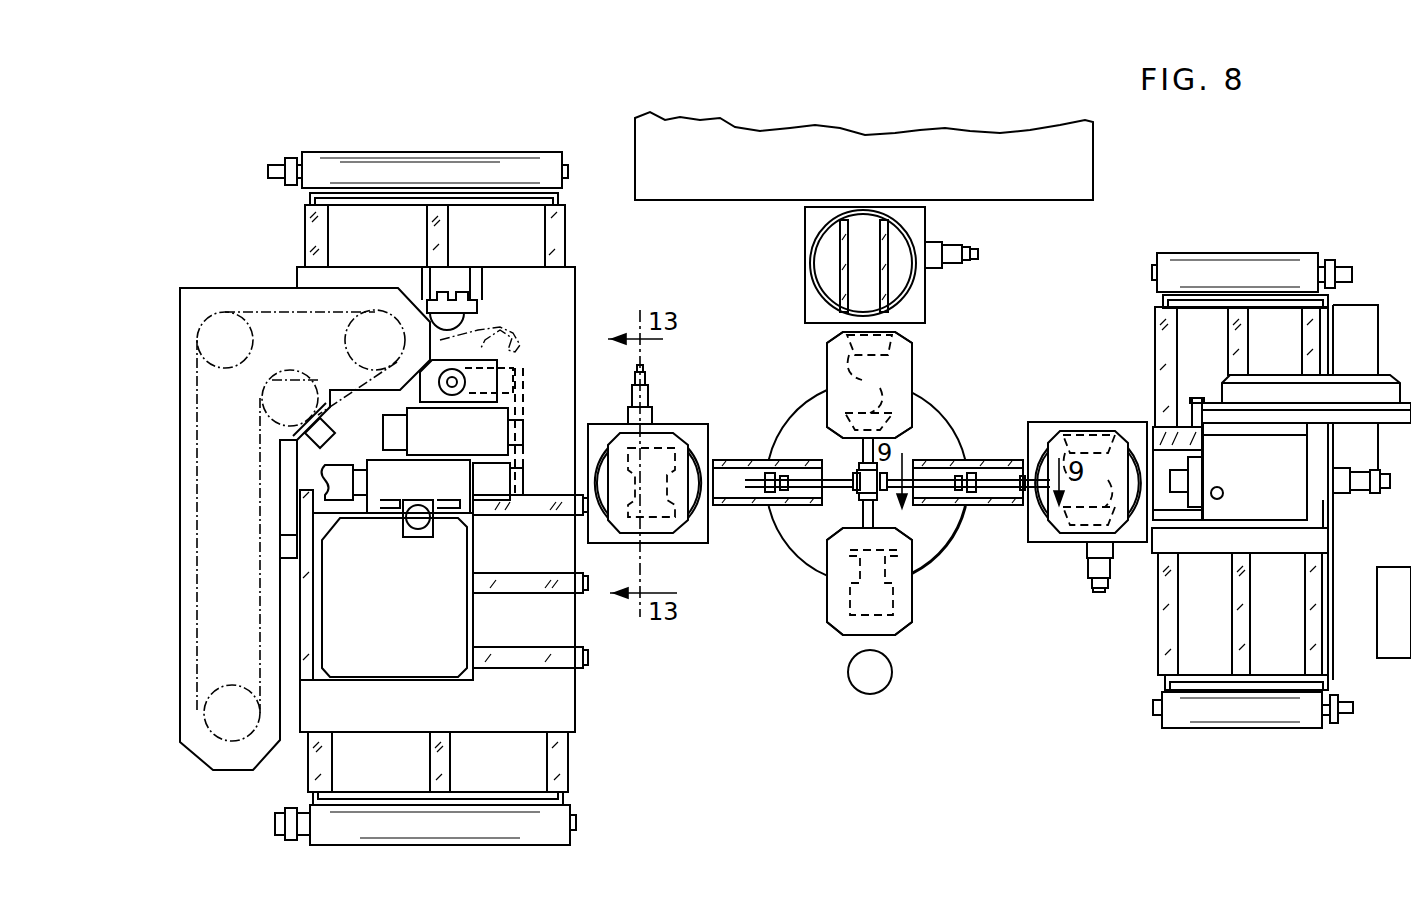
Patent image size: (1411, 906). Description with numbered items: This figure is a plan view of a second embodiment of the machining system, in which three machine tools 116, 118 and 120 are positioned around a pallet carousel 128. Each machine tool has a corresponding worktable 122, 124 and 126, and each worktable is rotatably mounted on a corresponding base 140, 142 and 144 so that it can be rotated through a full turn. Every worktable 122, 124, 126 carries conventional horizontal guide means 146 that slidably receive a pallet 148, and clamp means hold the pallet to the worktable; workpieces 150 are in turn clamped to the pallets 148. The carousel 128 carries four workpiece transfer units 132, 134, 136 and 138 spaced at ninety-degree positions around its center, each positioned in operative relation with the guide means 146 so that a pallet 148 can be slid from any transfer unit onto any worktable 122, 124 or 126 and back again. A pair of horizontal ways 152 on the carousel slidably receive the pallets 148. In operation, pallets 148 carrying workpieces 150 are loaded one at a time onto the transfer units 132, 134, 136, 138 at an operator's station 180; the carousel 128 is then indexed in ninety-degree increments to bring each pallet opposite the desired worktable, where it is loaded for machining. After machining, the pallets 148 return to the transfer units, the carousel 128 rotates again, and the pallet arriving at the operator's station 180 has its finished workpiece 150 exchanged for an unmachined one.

The machine tool 116 is at (602, 743).
The machine tool 118 is at (900, 83).
The machine tool 120 is at (1152, 681).
The worktable 122 is at (695, 503).
The worktable 124 is at (902, 278).
The worktable 126 is at (1033, 510).
The pallet carousel 128 is at (927, 537).
The workpiece transfer unit 132 is at (742, 460).
The workpiece transfer unit 134 is at (818, 361).
The workpiece transfer unit 136 is at (995, 452).
The workpiece transfer unit 138 is at (822, 611).
The base 140 is at (695, 428).
The base 142 is at (915, 310).
The base 144 is at (1072, 540).
The horizontal guide means 146 is at (890, 242).
The pallet 148 is at (658, 440).
The workpiece 150 is at (660, 500).
The horizontal ways 152 is at (977, 457).
The operator's station 180 is at (862, 695).